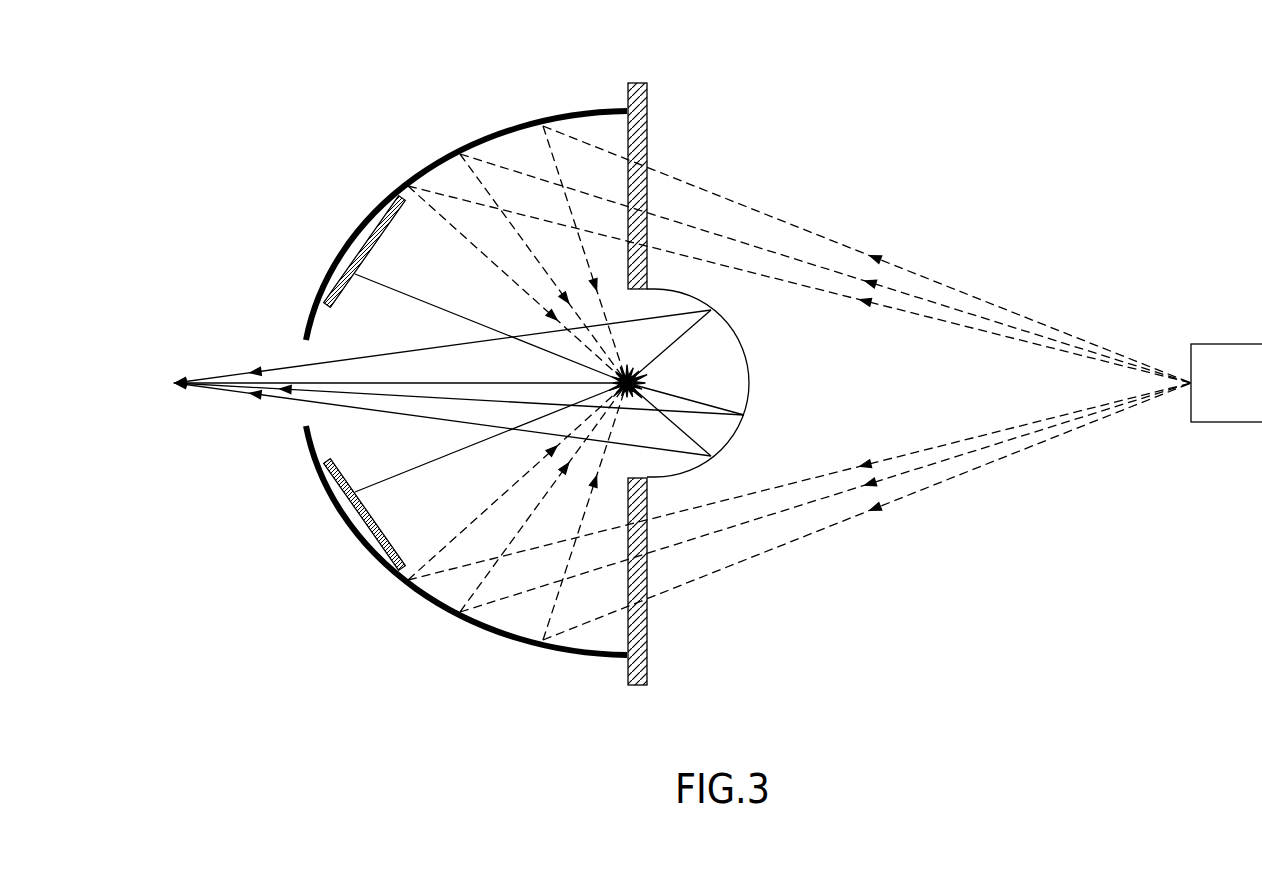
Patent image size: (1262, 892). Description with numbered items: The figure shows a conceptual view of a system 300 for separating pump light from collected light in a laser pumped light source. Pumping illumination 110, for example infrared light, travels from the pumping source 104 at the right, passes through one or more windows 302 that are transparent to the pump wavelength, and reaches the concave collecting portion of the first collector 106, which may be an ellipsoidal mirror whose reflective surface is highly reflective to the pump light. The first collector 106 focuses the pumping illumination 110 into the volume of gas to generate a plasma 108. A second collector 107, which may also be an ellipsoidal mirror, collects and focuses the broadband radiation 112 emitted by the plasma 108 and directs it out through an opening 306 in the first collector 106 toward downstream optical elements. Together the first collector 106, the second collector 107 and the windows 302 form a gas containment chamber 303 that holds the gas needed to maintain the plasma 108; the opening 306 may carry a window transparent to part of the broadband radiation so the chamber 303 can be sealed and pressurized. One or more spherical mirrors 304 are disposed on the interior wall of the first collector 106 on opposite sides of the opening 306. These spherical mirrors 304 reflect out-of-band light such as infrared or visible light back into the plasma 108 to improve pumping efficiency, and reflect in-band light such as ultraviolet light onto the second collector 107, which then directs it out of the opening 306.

The system 300 is at (256, 78).
The first collector 106 is at (441, 155).
The windows 302 is at (647, 133).
The second collector 107 is at (751, 372).
The spherical mirrors 304 is at (352, 292).
The gas containment chamber 303 is at (461, 284).
The plasma 108 is at (645, 378).
The broadband radiation 112 is at (447, 349).
The opening 306 is at (290, 356).
The pumping illumination 110 is at (737, 202).
The pumping source 104 is at (1249, 396).